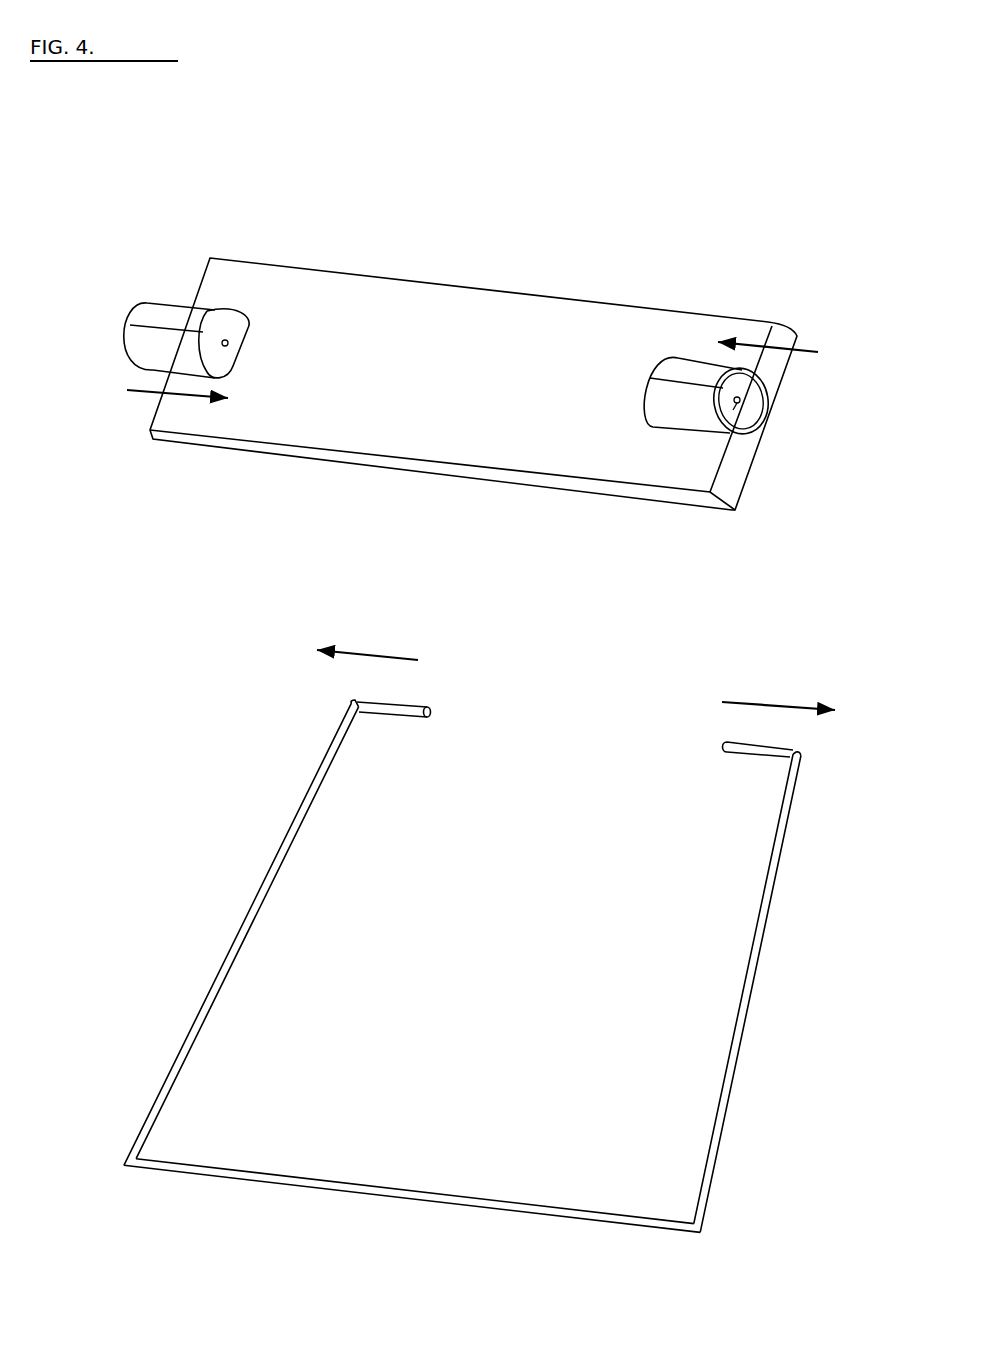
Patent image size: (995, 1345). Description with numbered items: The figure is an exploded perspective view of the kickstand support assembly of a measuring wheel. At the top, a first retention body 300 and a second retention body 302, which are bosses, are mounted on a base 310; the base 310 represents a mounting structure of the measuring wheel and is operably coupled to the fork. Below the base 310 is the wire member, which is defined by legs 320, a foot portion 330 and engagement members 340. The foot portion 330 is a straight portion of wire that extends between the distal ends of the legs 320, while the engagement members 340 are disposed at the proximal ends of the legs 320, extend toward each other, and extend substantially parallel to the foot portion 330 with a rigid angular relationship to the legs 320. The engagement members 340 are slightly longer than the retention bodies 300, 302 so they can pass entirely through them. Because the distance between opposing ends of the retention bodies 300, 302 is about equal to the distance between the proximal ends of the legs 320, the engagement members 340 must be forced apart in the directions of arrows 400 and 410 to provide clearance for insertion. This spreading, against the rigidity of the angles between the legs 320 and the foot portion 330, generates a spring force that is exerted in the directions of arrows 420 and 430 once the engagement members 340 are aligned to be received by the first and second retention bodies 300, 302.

The first retention body 300 is at (185, 310).
The second retention body 302 is at (692, 373).
The base 310 is at (533, 358).
The legs 320 is at (263, 888).
The foot portion 330 is at (413, 1195).
The engagement members 340 is at (398, 710).
The arrow 400 is at (377, 657).
The arrow 410 is at (768, 702).
The arrow 420 is at (192, 397).
The arrow 430 is at (750, 375).